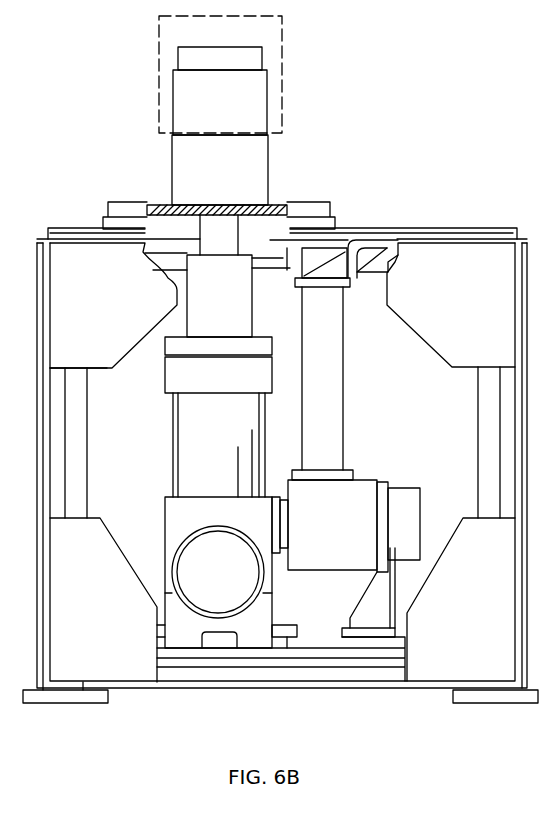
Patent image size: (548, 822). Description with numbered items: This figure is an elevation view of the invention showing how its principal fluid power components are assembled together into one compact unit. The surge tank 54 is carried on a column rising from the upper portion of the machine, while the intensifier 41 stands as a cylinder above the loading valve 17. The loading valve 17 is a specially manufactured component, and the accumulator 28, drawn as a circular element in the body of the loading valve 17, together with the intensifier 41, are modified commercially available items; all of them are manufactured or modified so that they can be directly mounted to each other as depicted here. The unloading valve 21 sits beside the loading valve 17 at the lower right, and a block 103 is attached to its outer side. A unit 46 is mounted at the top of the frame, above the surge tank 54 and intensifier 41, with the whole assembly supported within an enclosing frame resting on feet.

The drive motor unit 46 is at (255, 95).
The surge tank 54 is at (330, 345).
The intensifier 41 is at (190, 435).
The loading valve 17 is at (187, 521).
The accumulator 28 is at (232, 595).
The unloading valve 21 is at (350, 500).
The coupling block 103 is at (403, 522).